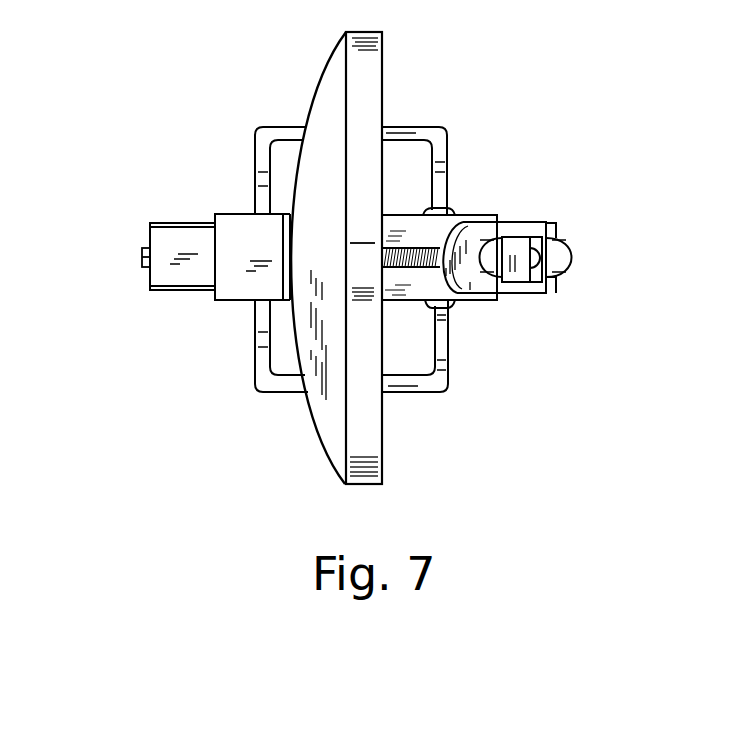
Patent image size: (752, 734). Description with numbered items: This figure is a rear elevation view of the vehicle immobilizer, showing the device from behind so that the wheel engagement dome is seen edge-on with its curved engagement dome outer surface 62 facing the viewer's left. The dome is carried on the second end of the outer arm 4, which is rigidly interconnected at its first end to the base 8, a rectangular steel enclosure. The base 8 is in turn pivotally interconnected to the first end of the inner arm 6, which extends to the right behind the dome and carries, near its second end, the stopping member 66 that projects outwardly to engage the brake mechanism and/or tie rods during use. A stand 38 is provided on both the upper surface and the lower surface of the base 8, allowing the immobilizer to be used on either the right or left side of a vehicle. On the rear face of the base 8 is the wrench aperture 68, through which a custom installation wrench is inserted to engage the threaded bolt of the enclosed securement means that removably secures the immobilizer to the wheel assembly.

The outer arm 4 is at (238, 302).
The inner arm 6 is at (508, 222).
The base 8 is at (182, 290).
The stand 38 is at (418, 127).
The engagement dome outer surface 62 is at (330, 118).
The stopping member 66 is at (538, 278).
The wrench aperture 68 is at (142, 255).